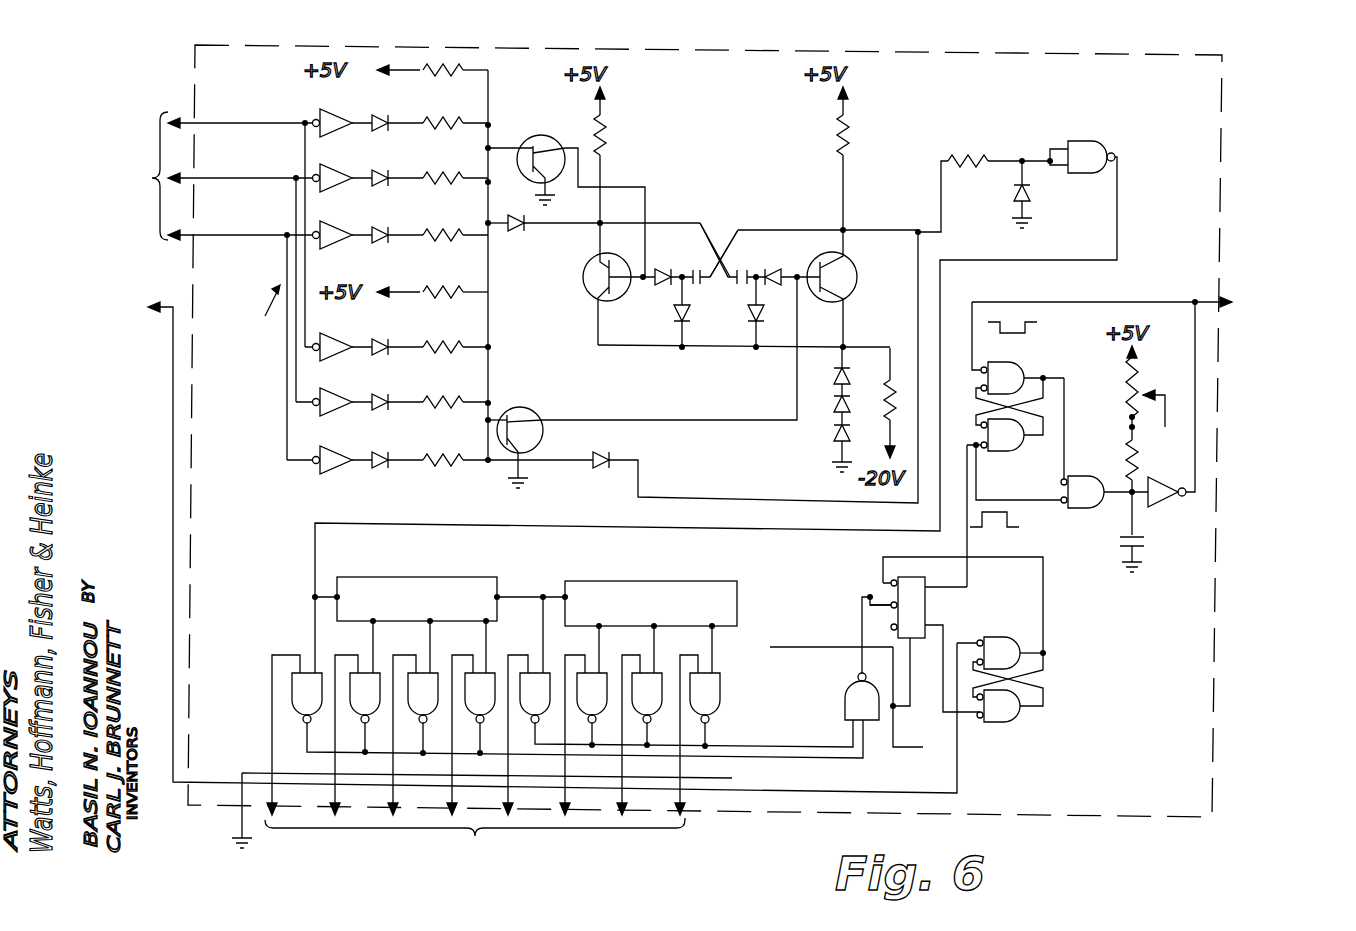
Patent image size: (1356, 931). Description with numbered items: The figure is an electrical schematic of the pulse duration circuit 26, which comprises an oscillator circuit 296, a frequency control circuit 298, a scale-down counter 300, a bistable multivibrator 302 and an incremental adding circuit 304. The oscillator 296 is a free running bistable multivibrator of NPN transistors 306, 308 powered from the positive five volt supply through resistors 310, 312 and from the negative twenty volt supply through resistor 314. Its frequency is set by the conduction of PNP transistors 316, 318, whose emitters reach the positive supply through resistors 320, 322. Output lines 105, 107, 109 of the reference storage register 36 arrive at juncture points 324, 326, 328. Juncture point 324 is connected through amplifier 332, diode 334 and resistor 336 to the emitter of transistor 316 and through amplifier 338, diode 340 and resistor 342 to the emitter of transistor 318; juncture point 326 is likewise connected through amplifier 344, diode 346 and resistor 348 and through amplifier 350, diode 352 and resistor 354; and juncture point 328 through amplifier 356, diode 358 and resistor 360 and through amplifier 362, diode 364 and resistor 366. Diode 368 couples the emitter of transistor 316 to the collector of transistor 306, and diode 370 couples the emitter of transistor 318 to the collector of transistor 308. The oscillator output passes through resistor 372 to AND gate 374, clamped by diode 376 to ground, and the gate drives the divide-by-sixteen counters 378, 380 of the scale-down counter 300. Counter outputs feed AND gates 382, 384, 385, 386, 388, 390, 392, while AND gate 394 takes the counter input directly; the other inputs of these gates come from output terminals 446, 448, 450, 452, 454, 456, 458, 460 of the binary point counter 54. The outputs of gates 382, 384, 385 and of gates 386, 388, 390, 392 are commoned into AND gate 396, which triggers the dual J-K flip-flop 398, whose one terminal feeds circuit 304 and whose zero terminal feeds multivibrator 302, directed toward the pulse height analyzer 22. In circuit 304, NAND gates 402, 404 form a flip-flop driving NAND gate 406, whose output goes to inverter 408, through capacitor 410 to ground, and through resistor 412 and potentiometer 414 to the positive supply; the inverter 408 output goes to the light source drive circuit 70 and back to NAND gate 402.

The pulse height analyzer 22 is at (84, 354).
The pulse duration circuit 26 is at (1041, 818).
The reference storage register 36 is at (84, 175).
The binary point counter 54 is at (517, 840).
The light source drive circuit 70 is at (1279, 363).
The output line 105 is at (182, 116).
The output line 107 is at (176, 176).
The output line 109 is at (177, 237).
The oscillator circuit 296 is at (720, 242).
The frequency control circuit 298 is at (246, 308).
The scale-down counter 300 is at (563, 553).
The bistable multivibrator 302 is at (1047, 677).
The incremental adding circuit 304 is at (1113, 513).
The NPN transistor 306 is at (592, 294).
The NPN transistor 308 is at (857, 286).
The resistor 310 is at (606, 141).
The resistor 312 is at (847, 135).
The resistor 314 is at (886, 394).
The PNP transistor 316 is at (560, 122).
The PNP transistor 318 is at (553, 398).
The resistor 320 is at (460, 70).
The resistor 322 is at (472, 278).
The juncture point 324 is at (305, 117).
The juncture point 326 is at (296, 176).
The juncture point 328 is at (290, 219).
The amplifier 332 is at (352, 105).
The diode 334 is at (400, 105).
The resistor 336 is at (432, 118).
The amplifier 338 is at (352, 327).
The diode 340 is at (398, 327).
The resistor 342 is at (432, 341).
The amplifier 344 is at (352, 162).
The diode 346 is at (398, 162).
The resistor 348 is at (428, 174).
The amplifier 350 is at (352, 385).
The diode 352 is at (398, 385).
The resistor 354 is at (432, 396).
The amplifier 356 is at (352, 220).
The diode 358 is at (398, 220).
The resistor 360 is at (432, 231).
The amplifier 362 is at (352, 445).
The diode 364 is at (398, 445).
The resistor 366 is at (432, 454).
The diode 368 is at (514, 232).
The diode 370 is at (612, 458).
The resistor 372 is at (954, 158).
The AND gate 374 is at (1097, 143).
The diode 376 is at (1031, 191).
The divide by 16 counter 378 is at (385, 577).
The divide by 16 counter 380 is at (624, 581).
The AND gate 382 is at (366, 650).
The AND gate 384 is at (424, 650).
The AND gate 385 is at (480, 650).
The AND gate 386 is at (535, 650).
The AND gate 388 is at (593, 650).
The AND gate 390 is at (648, 650).
The AND gate 392 is at (706, 650).
The AND gate 394 is at (300, 664).
The AND gate 396 is at (845, 712).
The dual J-K flip-flop 398 is at (926, 603).
The NAND gate 402 is at (1009, 364).
The NAND gate 404 is at (993, 454).
The NAND gate 406 is at (1117, 472).
The inverter 408 is at (1150, 508).
The capacitor 410 is at (1139, 546).
The resistor 412 is at (1134, 460).
The potentiometer 414 is at (1128, 399).
The output line 446 is at (277, 796).
The output terminal 448 is at (356, 735).
The output terminal 450 is at (415, 735).
The output terminal 452 is at (473, 735).
The output terminal 454 is at (529, 735).
The output terminal 456 is at (585, 735).
The output terminal 458 is at (642, 735).
The output terminal 460 is at (700, 735).